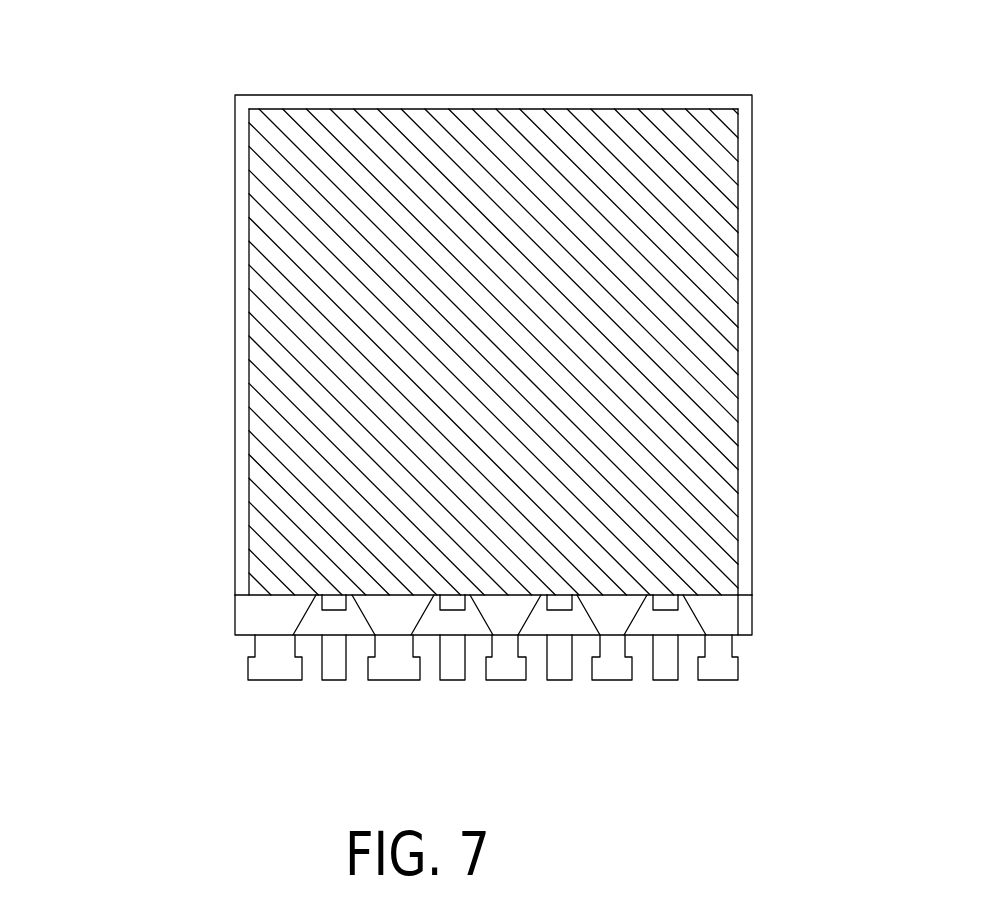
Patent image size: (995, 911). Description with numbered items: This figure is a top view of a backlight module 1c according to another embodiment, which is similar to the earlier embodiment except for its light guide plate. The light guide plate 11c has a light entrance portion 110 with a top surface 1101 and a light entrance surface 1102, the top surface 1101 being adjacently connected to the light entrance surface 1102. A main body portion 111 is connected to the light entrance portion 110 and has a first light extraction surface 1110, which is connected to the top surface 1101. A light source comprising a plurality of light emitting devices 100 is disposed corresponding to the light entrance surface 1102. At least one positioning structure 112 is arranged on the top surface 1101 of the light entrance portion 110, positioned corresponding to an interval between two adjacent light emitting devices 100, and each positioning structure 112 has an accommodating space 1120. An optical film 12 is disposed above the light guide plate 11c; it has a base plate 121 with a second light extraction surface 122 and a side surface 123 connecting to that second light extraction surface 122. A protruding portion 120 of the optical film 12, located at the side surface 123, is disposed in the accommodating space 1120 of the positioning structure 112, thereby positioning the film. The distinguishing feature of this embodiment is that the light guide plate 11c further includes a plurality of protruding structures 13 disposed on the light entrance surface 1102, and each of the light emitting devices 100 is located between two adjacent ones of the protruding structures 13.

The backlight module 1c is at (855, 45).
The light emitting devices 100 is at (507, 668).
The optical film 12 is at (118, 200).
The protruding portion 120 is at (322, 598).
The base plate 121 is at (263, 338).
The second light extraction surface 122 is at (262, 224).
The side surface 123 is at (393, 593).
The light guide plate 11c is at (100, 472).
The light entrance portion 110 is at (265, 628).
The top surface 1101 is at (255, 607).
The light entrance surface 1102 is at (327, 637).
The main body portion 111 is at (243, 553).
The first light extraction surface 1110 is at (242, 495).
The positioning structure 112 is at (682, 615).
The accommodating space 1120 is at (664, 600).
The protruding structures 13 is at (668, 695).